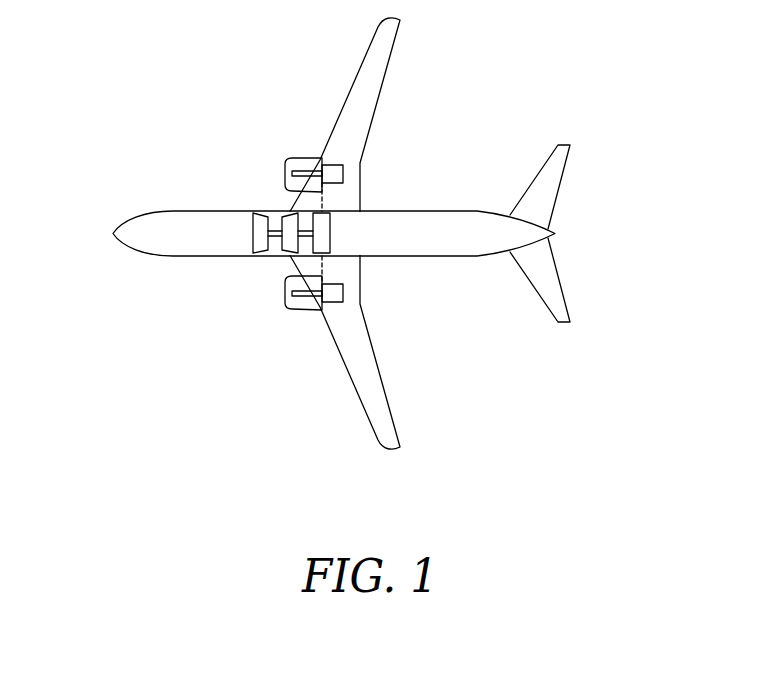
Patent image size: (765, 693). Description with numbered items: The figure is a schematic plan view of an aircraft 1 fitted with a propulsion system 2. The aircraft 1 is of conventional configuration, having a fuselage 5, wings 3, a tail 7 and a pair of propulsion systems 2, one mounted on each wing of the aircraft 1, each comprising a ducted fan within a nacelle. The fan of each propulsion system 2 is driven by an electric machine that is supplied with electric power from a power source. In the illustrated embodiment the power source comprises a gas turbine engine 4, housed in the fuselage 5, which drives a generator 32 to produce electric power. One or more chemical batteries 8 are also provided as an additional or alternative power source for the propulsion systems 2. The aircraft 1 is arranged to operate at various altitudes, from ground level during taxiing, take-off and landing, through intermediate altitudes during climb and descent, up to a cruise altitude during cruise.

The aircraft 1 is at (92, 234).
The propulsion system 2 is at (268, 168).
The wings 3 is at (372, 75).
The gas turbine engine 4 is at (233, 246).
The fuselage 5 is at (188, 222).
The tail 7 is at (553, 292).
The chemical batteries 8 is at (343, 173).
The generator 32 is at (330, 232).